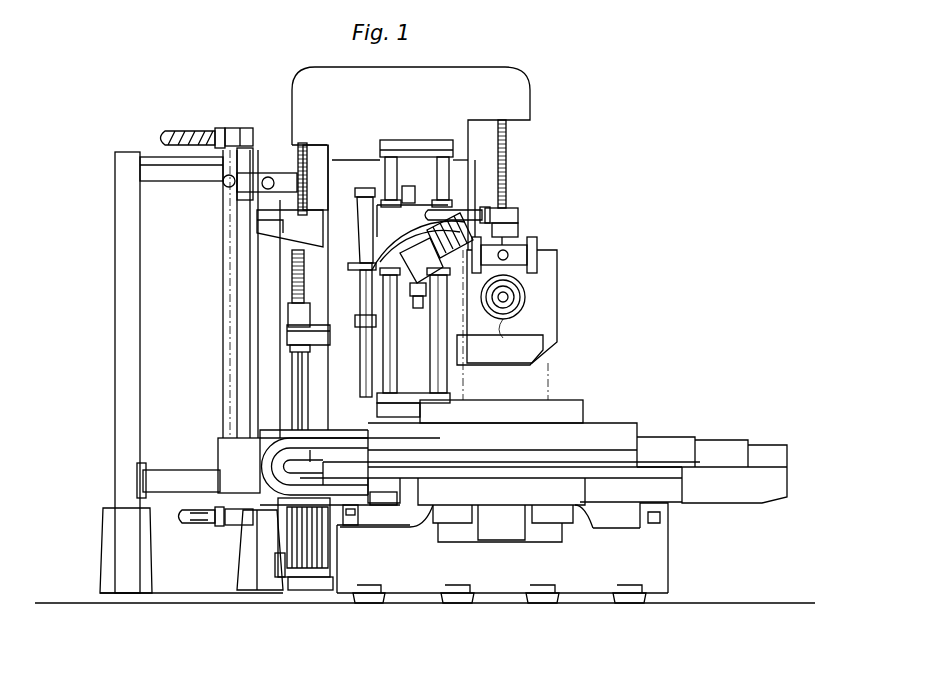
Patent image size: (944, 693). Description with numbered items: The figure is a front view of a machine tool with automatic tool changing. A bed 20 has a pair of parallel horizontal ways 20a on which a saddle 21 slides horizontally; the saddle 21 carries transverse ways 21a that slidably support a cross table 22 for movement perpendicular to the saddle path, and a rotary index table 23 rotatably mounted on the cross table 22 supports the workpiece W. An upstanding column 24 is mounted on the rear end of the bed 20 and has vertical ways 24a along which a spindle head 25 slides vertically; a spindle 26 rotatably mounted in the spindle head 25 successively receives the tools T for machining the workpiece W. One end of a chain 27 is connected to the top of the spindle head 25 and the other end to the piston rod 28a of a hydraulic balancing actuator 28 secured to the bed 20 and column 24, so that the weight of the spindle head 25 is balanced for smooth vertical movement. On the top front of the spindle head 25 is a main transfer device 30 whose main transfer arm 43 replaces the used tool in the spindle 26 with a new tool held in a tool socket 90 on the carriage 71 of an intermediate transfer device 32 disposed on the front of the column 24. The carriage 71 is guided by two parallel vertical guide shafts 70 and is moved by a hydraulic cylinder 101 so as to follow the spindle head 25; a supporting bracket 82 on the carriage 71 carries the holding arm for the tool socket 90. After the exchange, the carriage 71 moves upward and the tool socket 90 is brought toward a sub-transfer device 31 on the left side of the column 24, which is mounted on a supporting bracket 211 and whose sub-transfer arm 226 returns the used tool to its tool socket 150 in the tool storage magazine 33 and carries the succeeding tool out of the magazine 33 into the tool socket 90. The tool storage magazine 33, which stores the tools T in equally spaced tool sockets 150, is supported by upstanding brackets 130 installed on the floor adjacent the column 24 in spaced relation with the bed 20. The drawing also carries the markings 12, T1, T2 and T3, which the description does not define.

The feed direction arrow 12 is at (92, 323).
The bed 20 is at (512, 603).
The ways 20a is at (350, 517).
The saddle 21 is at (465, 497).
The ways 21a is at (720, 355).
The cross table 22 is at (523, 423).
The rotary index table 23 is at (534, 383).
The column 24 is at (288, 398).
The vertical ways 24a is at (448, 158).
The spindle head 25 is at (557, 292).
The spindle 26 is at (515, 300).
The chain 27 is at (506, 162).
The hydraulic balancing actuator 28 is at (218, 426).
The piston rod 28a is at (290, 313).
The main transfer device 30 is at (542, 241).
The sub-transfer device 31 is at (243, 203).
The intermediate transfer device 32 is at (378, 185).
The tool storage magazine 33 is at (158, 150).
The main transfer arm 43 is at (532, 256).
The guide shafts 70 is at (440, 347).
The carriage 71 is at (380, 213).
The supporting bracket 82 is at (433, 287).
The tool socket 90 is at (498, 214).
The hydraulic cylinder 101 is at (362, 316).
The upstanding brackets 130 is at (122, 437).
The tool sockets 150 is at (240, 134).
The supporting bracket 211 is at (283, 276).
The sub-transfer arm 226 is at (248, 134).
The tools T is at (185, 130).
The tool position one T1 is at (500, 342).
The tool position two T2 is at (460, 209).
The tool position three T3 is at (220, 190).
The workpiece W is at (572, 355).